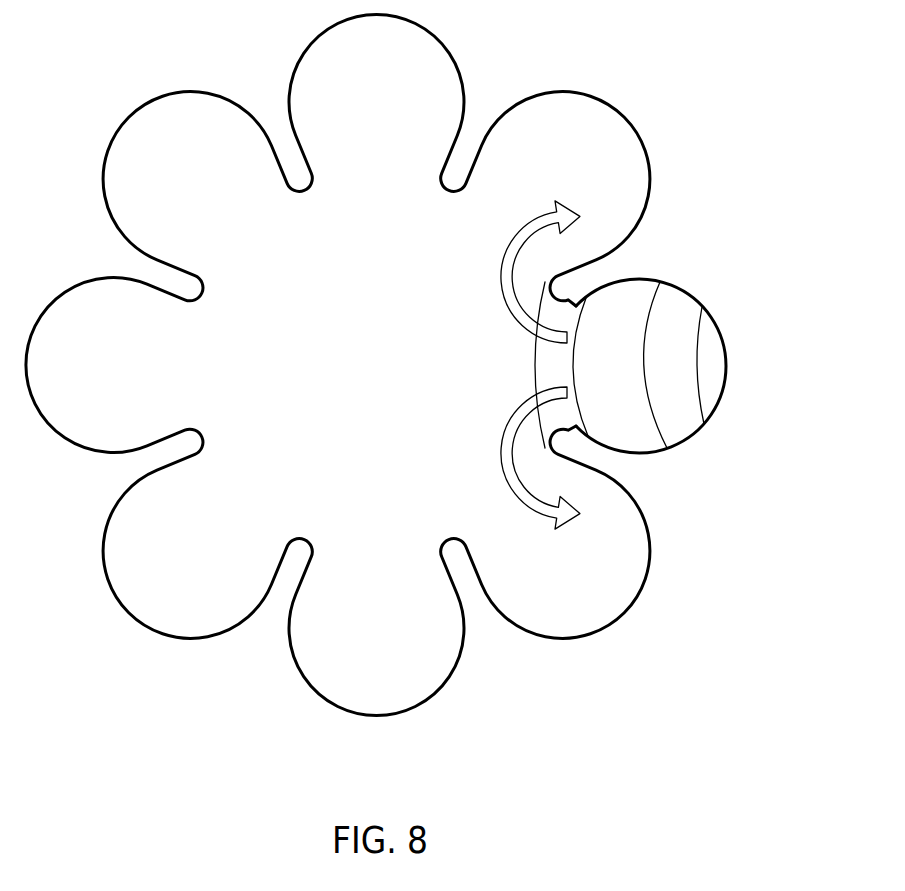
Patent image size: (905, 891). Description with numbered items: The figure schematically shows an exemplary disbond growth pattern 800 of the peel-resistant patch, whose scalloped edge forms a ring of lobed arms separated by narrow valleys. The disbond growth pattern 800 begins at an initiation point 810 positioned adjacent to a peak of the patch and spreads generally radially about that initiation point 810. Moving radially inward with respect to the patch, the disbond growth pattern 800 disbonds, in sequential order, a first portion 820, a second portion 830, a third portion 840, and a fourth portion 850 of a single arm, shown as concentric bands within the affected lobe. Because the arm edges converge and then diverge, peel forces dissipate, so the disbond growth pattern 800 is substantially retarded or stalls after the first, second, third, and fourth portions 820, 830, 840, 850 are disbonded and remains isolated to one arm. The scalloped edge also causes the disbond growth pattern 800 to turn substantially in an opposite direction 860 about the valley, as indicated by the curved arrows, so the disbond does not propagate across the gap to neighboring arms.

The disbond growth pattern 800 is at (748, 447).
The initiation point 810 is at (749, 371).
The first portion 820 is at (716, 340).
The second portion 830 is at (683, 304).
The third portion 840 is at (630, 297).
The fourth portion 850 is at (575, 296).
The opposite direction 860 is at (501, 281).